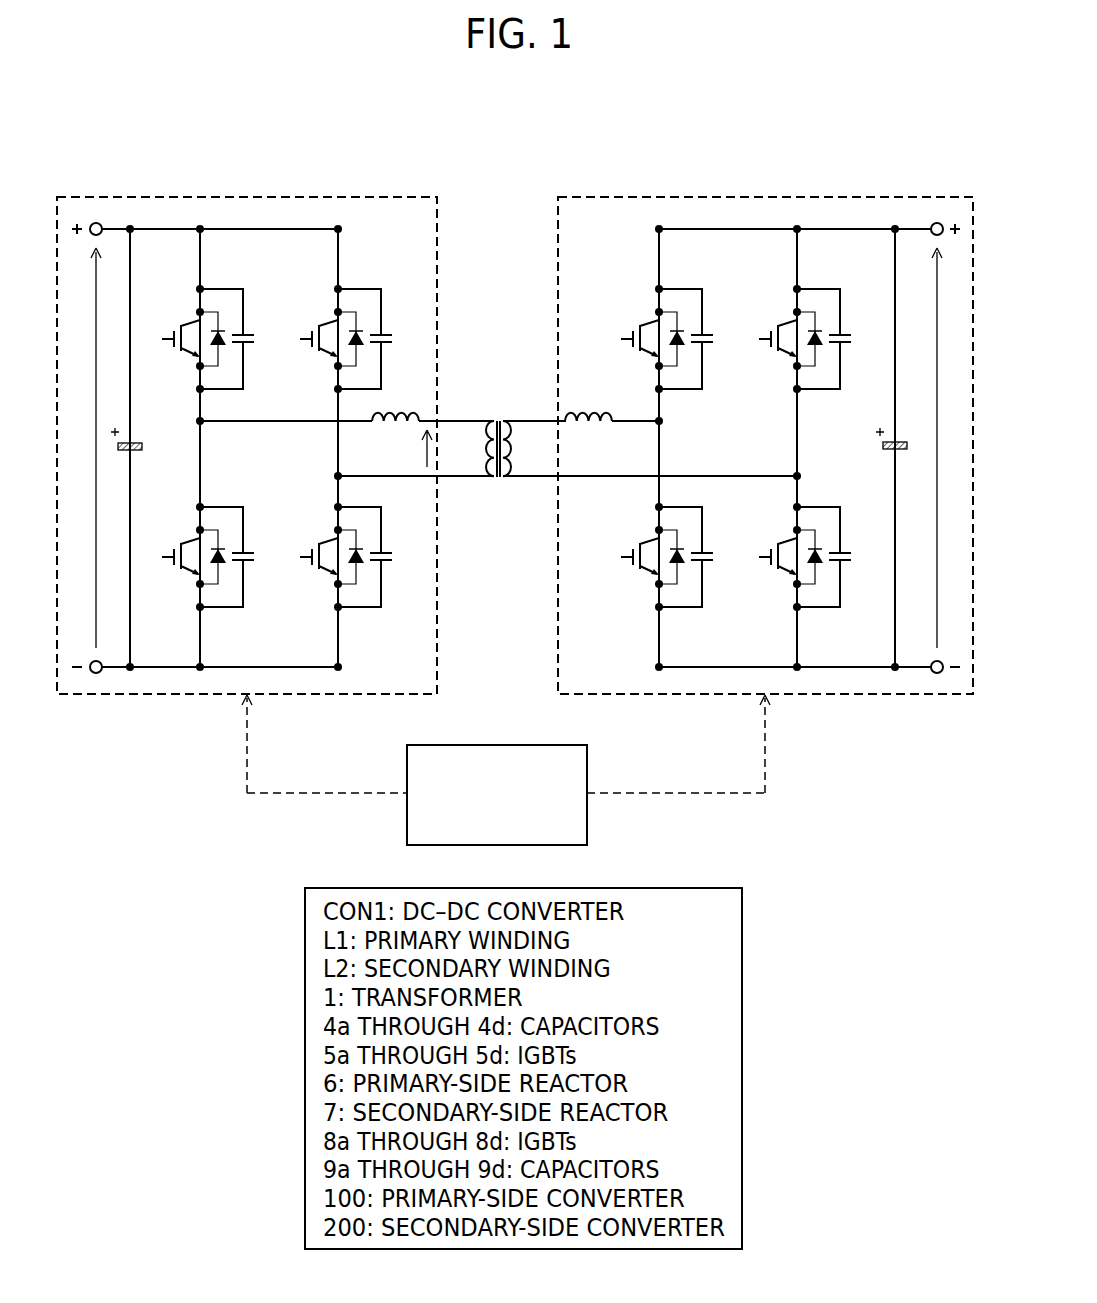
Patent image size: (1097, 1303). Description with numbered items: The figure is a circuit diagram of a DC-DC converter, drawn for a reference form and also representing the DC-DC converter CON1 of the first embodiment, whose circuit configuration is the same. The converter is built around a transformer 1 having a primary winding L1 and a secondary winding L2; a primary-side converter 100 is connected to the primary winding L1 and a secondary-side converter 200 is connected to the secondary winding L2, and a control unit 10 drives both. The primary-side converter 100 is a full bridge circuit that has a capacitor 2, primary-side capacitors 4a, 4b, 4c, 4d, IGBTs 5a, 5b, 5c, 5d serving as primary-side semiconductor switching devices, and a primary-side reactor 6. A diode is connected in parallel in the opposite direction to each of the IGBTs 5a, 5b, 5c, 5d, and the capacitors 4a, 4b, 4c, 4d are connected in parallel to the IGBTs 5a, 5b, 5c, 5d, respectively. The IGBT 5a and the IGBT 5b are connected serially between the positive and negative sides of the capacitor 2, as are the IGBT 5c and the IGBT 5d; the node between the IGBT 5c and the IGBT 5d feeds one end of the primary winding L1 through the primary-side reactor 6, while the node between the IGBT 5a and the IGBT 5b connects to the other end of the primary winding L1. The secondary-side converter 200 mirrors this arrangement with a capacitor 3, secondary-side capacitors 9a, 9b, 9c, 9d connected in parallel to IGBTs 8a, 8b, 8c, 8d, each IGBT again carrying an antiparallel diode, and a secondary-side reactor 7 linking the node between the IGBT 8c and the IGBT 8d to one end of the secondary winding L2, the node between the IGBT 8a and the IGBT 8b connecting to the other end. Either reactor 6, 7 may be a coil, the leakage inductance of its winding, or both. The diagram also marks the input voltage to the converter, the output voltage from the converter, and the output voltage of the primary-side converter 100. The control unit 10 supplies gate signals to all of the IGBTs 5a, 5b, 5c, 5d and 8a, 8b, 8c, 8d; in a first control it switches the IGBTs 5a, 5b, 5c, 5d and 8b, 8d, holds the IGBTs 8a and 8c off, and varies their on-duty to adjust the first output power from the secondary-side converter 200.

The DC-DC converter CON1 is at (631, 134).
The primary winding L1 is at (482, 453).
The secondary winding L2 is at (512, 453).
The transformer 1 is at (496, 417).
The capacitor 2 is at (142, 446).
The capacitor 3 is at (907, 446).
The primary-side capacitor 4a is at (374, 339).
The primary-side capacitor 4b is at (374, 557).
The primary-side capacitor 4c is at (235, 339).
The primary-side capacitor 4d is at (236, 557).
The IGBT 5a is at (317, 348).
The IGBT 5b is at (316, 566).
The IGBT 5c is at (179, 348).
The IGBT 5d is at (178, 566).
The primary-side reactor 6 is at (403, 410).
The secondary-side reactor 7 is at (593, 410).
The IGBT 8a is at (780, 348).
The IGBT 8b is at (779, 566).
The IGBT 8c is at (642, 348).
The IGBT 8d is at (641, 566).
The secondary-side capacitor 9a is at (834, 339).
The secondary-side capacitor 9b is at (834, 557).
The secondary-side capacitor 9c is at (695, 339).
The secondary-side capacitor 9d is at (696, 557).
The control unit 10 is at (538, 744).
The primary-side converter 100 is at (247, 197).
The secondary-side converter 200 is at (765, 197).